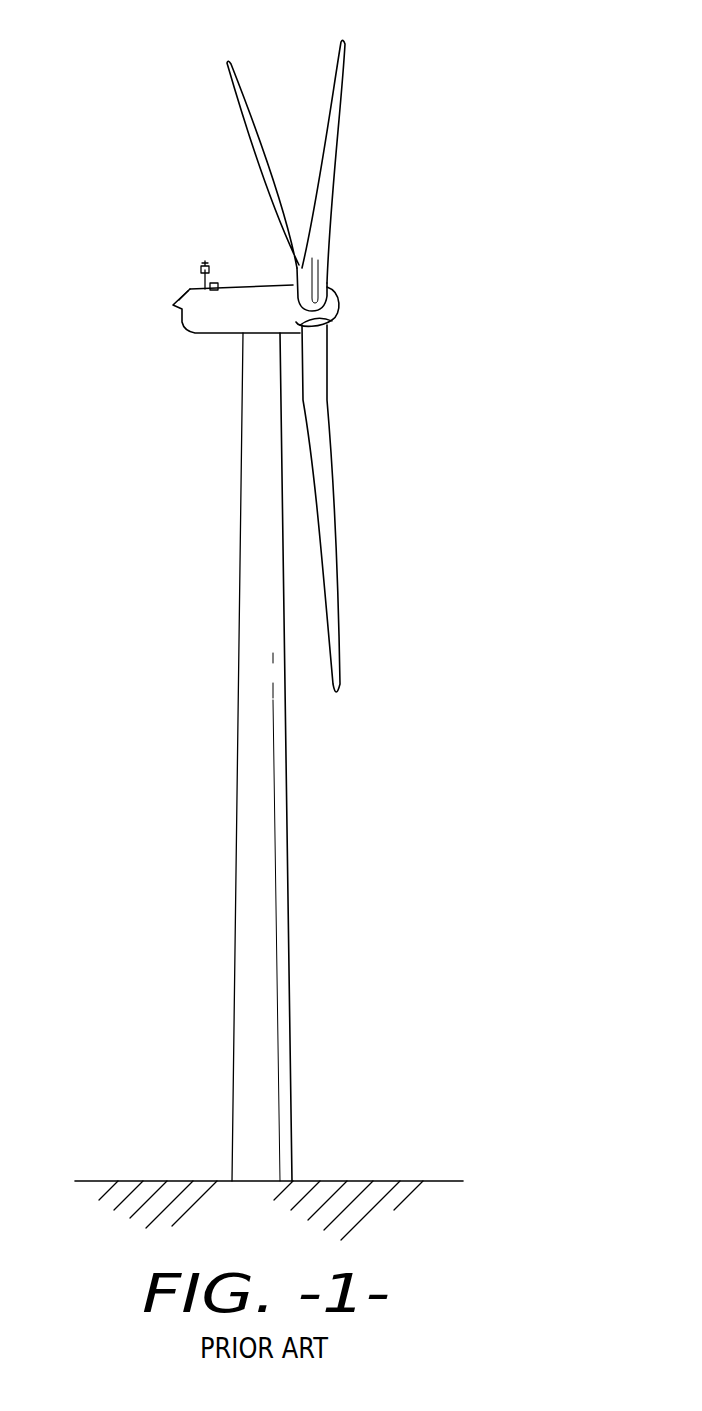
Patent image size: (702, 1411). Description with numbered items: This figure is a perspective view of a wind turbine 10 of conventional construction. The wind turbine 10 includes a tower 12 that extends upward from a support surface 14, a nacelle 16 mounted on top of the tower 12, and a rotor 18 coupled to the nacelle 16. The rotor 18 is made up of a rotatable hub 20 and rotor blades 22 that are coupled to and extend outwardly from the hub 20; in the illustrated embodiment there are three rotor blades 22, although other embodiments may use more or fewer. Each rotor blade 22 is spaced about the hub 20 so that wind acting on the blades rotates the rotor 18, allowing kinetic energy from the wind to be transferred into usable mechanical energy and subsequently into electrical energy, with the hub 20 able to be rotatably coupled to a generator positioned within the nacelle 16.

The wind turbine 10 is at (462, 122).
The tower 12 is at (247, 875).
The support surface 14 is at (158, 1181).
The nacelle 16 is at (217, 335).
The rotor 18 is at (348, 274).
The rotatable hub 20 is at (338, 315).
The rotor blade 22 is at (333, 83).